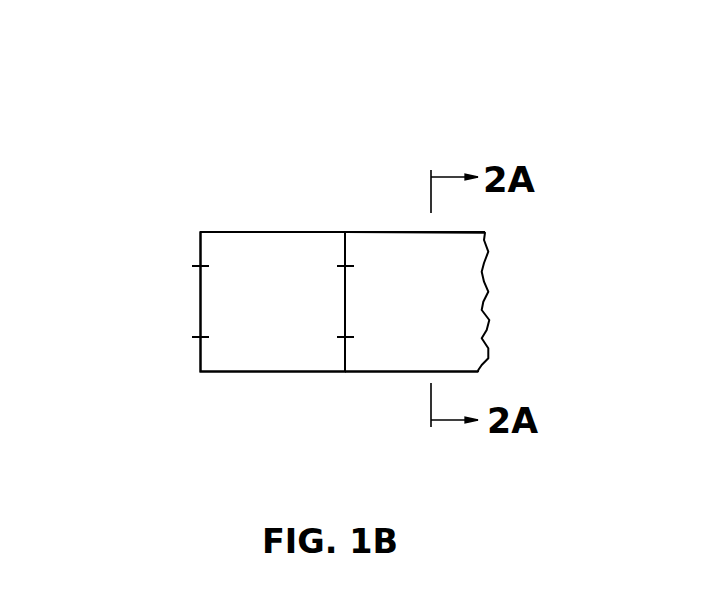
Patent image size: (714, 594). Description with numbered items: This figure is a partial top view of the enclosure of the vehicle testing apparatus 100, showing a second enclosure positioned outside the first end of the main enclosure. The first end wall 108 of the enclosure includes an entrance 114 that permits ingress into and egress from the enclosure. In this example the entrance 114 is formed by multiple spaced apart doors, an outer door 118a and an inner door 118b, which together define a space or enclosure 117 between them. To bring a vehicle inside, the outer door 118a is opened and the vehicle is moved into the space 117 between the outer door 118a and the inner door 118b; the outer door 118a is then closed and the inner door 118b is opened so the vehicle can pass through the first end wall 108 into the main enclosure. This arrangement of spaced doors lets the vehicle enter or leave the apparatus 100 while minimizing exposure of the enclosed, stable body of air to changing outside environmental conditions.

The apparatus 100 is at (315, 251).
The enclosure 117 is at (273, 273).
The entrance 114 is at (387, 297).
The first end wall 108 is at (345, 353).
The outer door 118a is at (200, 298).
The inner door 118b is at (345, 313).